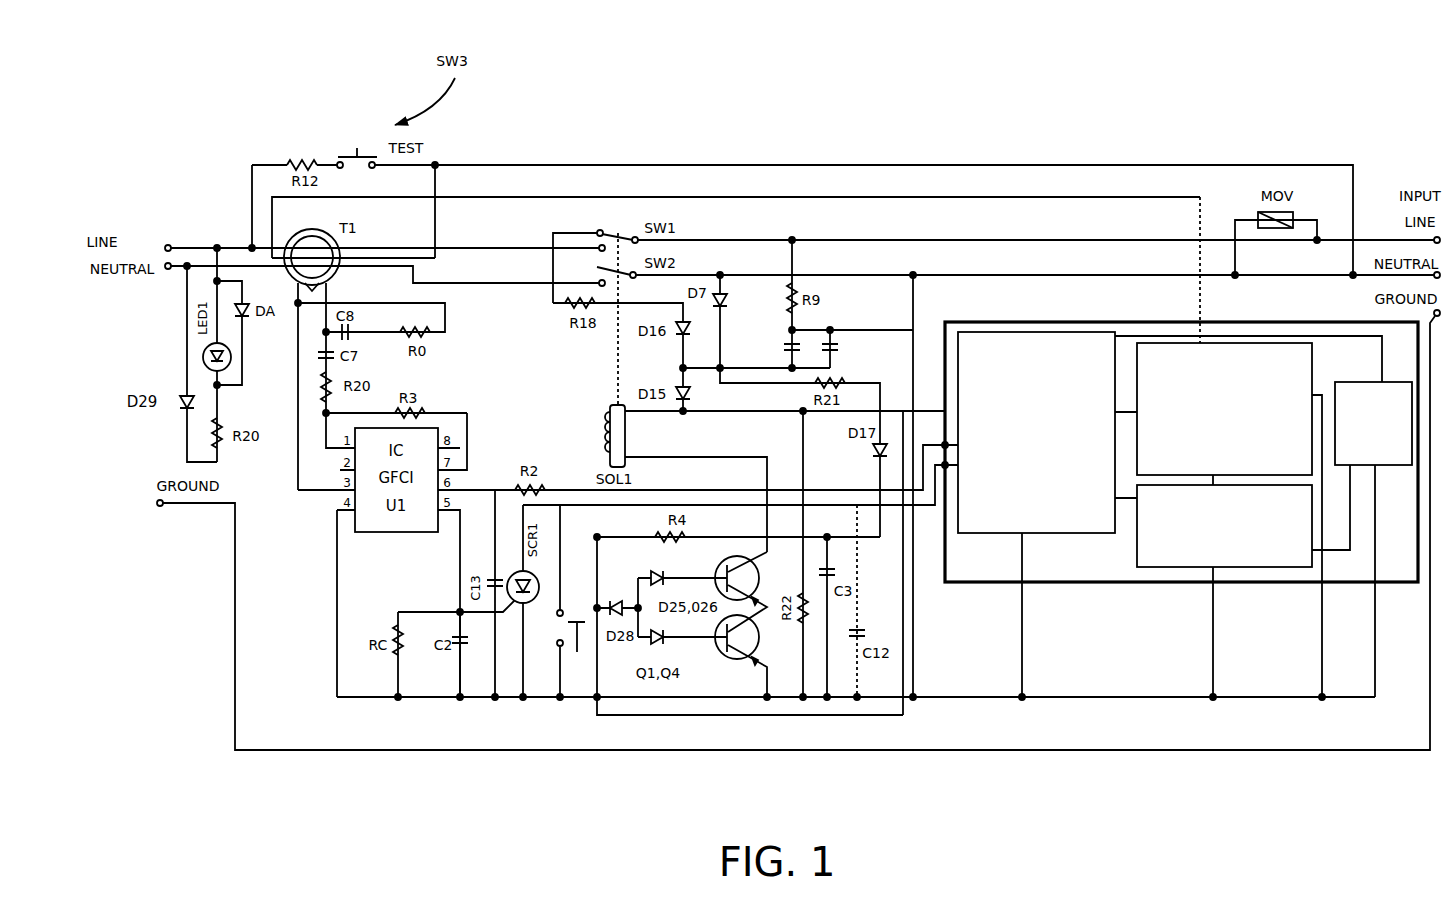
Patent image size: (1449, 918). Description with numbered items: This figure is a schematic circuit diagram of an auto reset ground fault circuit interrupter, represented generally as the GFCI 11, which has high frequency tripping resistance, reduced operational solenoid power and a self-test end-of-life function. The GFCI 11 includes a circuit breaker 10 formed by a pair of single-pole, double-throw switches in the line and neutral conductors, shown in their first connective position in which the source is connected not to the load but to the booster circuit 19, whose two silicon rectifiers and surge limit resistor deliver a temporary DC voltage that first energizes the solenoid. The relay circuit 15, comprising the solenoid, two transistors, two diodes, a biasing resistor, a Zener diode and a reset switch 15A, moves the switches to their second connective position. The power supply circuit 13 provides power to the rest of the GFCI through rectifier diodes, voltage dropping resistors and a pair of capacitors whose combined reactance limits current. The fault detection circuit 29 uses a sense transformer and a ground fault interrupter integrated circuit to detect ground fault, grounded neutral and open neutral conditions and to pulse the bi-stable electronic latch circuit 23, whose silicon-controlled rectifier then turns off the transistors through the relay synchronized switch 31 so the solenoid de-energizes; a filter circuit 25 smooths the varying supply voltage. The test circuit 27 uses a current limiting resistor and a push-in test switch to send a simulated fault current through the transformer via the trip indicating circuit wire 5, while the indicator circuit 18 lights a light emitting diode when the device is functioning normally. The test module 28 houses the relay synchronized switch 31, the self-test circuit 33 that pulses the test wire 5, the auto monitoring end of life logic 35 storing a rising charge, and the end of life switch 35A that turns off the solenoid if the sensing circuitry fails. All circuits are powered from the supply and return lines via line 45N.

The trip indicating circuit wire 5 is at (452, 180).
The circuit breaker 10 is at (546, 318).
The ground fault circuit interrupter 11 is at (702, 135).
The power supply circuit 13 is at (835, 322).
The relay circuit 15 is at (716, 722).
The reset switch 15A is at (572, 657).
The indicator circuit 18 is at (212, 203).
The booster circuit 19 is at (635, 352).
The bi-stable electronic latch circuit 23 is at (503, 706).
The filter circuit 25 is at (826, 722).
The test circuit 27 is at (350, 140).
The test module 28 is at (1005, 592).
The fault detection circuit 29 is at (330, 585).
The relay synchronized switch 31 is at (1036, 432).
The self-test circuit 33 is at (1224, 409).
The auto monitoring end of life logic 35 is at (1128, 548).
The end of life switch 35A is at (1373, 423).
The line 45N is at (922, 320).